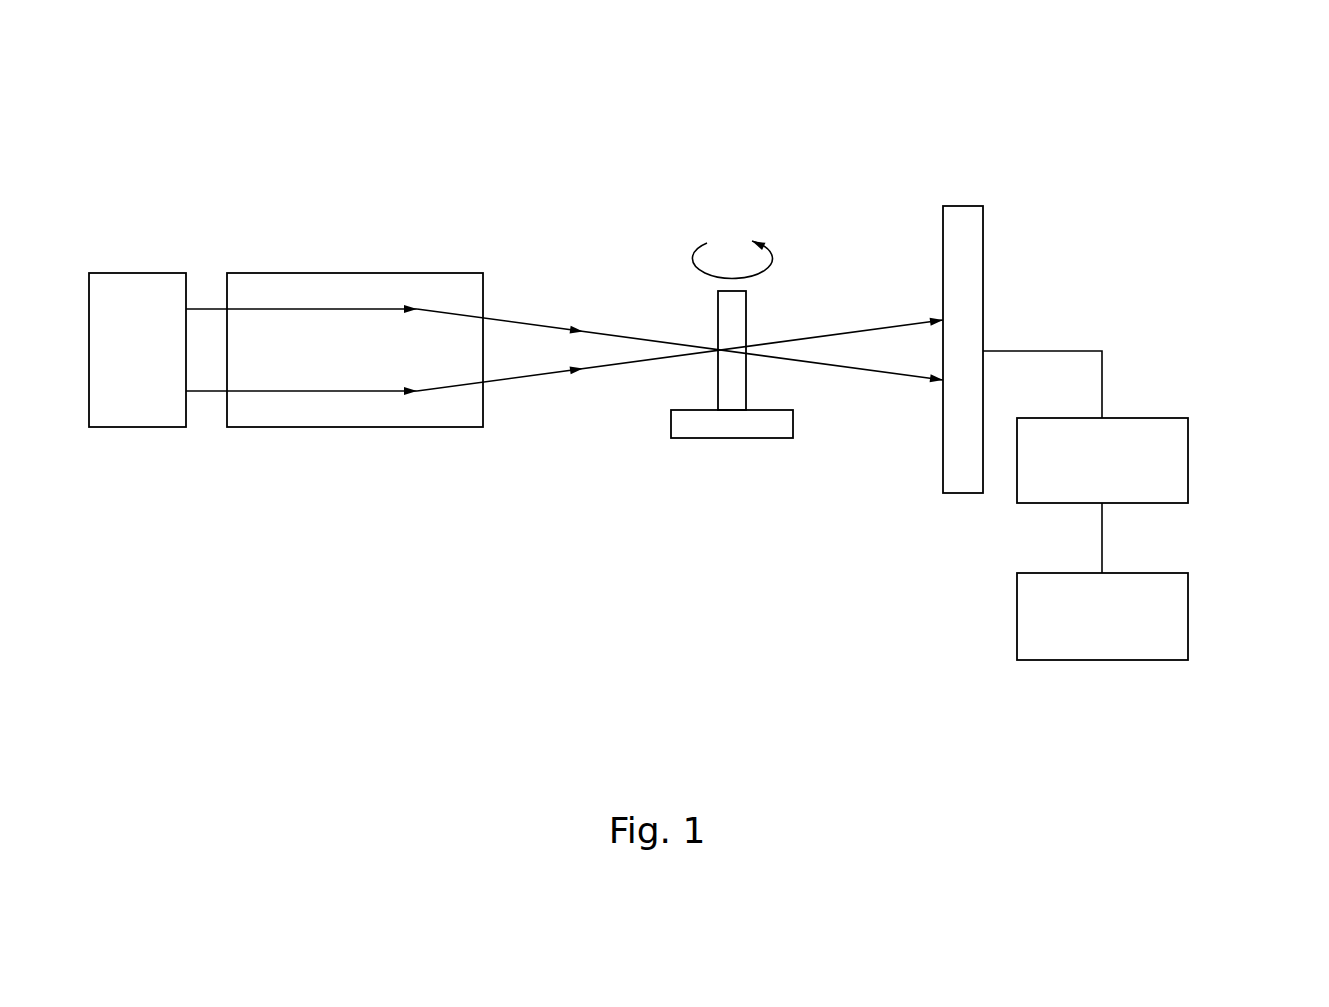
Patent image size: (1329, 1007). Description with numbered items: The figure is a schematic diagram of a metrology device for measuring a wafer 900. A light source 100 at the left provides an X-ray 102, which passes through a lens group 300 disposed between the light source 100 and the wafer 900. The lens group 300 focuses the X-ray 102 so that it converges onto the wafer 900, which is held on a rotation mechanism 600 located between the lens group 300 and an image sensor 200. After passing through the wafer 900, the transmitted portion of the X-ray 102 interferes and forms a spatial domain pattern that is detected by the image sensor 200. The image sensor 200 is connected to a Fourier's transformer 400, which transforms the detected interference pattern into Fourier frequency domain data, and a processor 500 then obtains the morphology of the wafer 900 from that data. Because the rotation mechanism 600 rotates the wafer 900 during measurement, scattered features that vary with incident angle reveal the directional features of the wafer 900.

The light source 100 is at (140, 287).
The X-ray 102 is at (565, 267).
The lens group 300 is at (350, 285).
The wafer 900 is at (733, 312).
The rotation mechanism 600 is at (737, 428).
The image sensor 200 is at (962, 237).
The Fourier's transformer 400 is at (1152, 461).
The processor 500 is at (1152, 608).